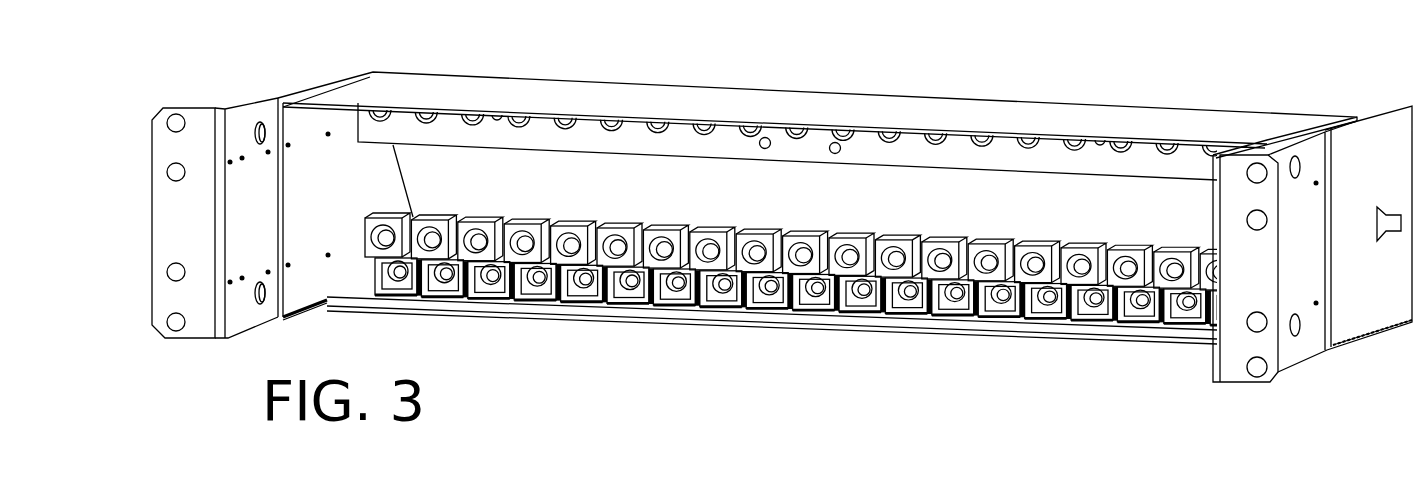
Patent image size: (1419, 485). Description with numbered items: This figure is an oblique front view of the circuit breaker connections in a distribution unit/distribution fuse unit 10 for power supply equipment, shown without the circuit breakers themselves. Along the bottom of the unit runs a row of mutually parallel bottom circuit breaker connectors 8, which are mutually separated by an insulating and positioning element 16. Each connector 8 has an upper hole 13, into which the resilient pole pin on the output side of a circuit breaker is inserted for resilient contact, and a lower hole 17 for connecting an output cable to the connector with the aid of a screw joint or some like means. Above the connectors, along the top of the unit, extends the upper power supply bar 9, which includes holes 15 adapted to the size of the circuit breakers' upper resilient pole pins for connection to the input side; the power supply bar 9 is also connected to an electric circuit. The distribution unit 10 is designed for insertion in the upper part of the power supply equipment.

The bottom circuit breaker connector 8 is at (690, 292).
The upper power supply bar 9 is at (728, 137).
The distribution unit/distribution fuse unit 10 is at (1377, 145).
The upper hole 13 is at (617, 257).
The hole 15 is at (845, 130).
The insulating and positioning element 16 is at (882, 300).
The lower hole 17 is at (810, 292).